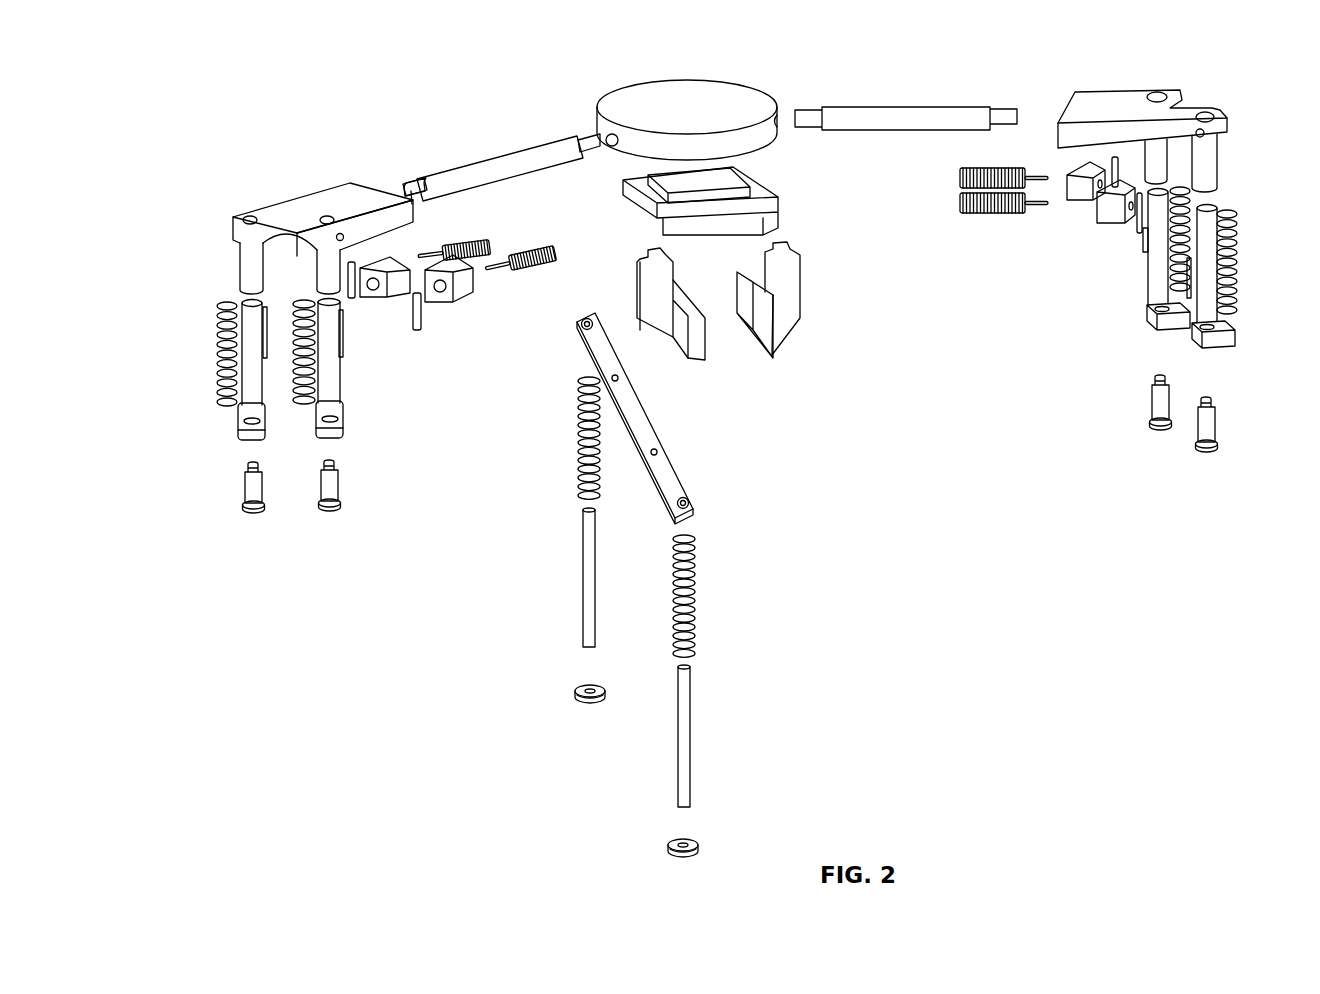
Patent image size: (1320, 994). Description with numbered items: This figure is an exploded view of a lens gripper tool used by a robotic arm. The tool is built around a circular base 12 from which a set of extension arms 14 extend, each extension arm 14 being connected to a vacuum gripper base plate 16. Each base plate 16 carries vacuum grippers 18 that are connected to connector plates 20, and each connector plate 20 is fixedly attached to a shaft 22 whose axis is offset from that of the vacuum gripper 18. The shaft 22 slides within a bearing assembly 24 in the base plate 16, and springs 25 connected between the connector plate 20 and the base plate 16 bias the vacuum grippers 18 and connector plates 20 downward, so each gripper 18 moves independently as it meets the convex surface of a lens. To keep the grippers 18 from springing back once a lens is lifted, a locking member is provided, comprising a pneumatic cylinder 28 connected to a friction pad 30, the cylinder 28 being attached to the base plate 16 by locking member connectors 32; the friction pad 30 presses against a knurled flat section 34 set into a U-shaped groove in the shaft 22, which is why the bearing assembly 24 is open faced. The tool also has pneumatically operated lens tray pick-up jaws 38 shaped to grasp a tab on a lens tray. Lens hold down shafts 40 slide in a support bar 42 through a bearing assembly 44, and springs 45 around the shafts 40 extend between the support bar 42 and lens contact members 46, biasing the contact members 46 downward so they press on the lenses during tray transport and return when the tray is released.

The circular base 12 is at (705, 82).
The extension arms 14 is at (545, 147).
The vacuum gripper base plate 16 is at (322, 195).
The vacuum grippers 18 is at (245, 490).
The connector plates 20 is at (343, 428).
The shaft 22 is at (333, 395).
The bearing assembly 24 is at (243, 260).
The springs 25 is at (295, 306).
The pneumatic cylinder 28 is at (472, 245).
The friction pad 30 is at (353, 298).
The locking member connectors 32 is at (383, 262).
The knurled flat section 34 is at (344, 330).
The lens tray pick-up jaws 38 is at (773, 340).
The lens hold down shafts 40 is at (583, 620).
The support bar 42 is at (675, 460).
The bearing assembly 44 is at (575, 327).
The springs 45 is at (578, 428).
The lens contact members 46 is at (578, 690).